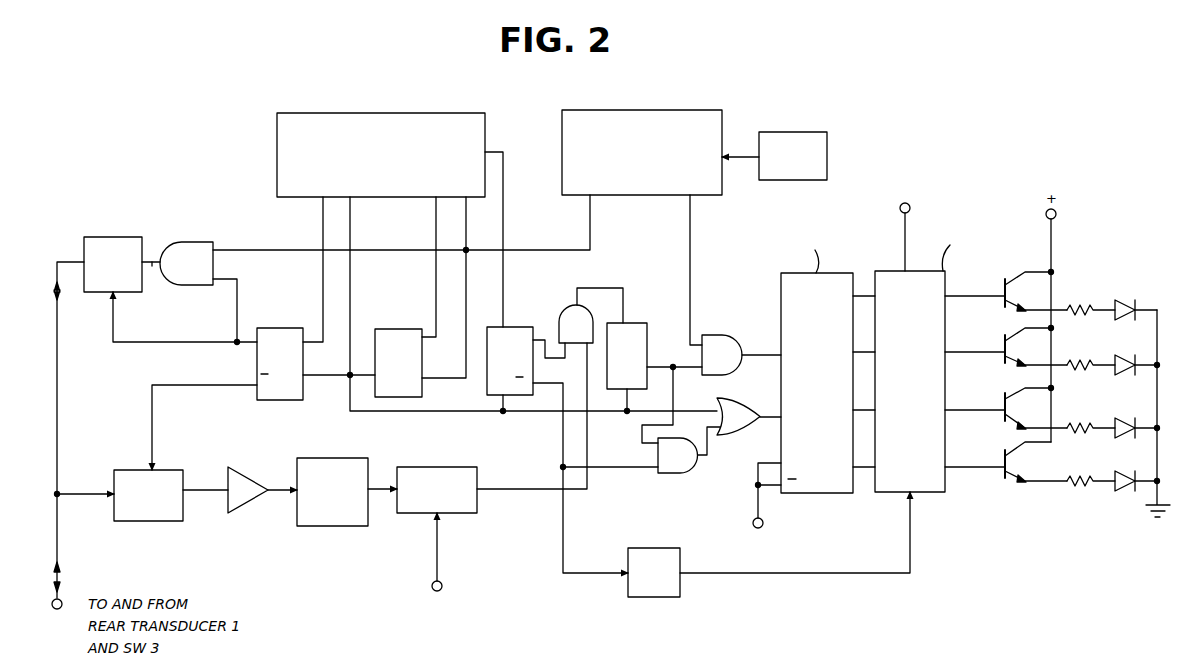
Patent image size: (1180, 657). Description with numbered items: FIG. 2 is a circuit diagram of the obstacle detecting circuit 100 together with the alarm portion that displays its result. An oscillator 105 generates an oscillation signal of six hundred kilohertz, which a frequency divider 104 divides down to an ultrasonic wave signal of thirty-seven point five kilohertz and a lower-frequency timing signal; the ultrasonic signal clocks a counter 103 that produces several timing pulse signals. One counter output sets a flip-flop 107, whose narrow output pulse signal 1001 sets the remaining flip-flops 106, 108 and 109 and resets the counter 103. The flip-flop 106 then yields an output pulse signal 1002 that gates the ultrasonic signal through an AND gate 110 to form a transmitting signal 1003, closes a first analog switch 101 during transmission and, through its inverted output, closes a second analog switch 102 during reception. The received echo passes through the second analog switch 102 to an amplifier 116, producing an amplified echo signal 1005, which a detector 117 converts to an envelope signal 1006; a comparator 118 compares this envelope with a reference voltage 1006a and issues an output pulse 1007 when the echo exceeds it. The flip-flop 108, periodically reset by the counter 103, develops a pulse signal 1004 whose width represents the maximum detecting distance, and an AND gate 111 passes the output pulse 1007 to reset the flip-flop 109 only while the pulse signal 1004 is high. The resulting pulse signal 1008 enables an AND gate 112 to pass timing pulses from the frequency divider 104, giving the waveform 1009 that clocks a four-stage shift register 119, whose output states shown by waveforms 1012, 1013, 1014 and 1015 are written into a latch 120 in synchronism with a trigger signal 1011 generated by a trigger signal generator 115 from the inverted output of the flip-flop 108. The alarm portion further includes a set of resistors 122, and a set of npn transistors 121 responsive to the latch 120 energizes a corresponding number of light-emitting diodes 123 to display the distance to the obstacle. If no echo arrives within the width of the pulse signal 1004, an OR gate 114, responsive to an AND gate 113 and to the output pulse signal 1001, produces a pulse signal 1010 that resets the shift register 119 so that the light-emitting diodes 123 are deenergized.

The obstacle detecting circuit 100 is at (915, 142).
The first analog switch 101 is at (113, 237).
The second analog switch 102 is at (166, 521).
The counter 103 is at (380, 113).
The frequency divider 104 is at (695, 110).
The oscillator 105 is at (780, 132).
The flip-flop 106 is at (303, 400).
The flip-flop 107 is at (415, 369).
The flip-flop 108 is at (497, 395).
The flip-flop 109 is at (617, 393).
The AND gate 110 is at (190, 242).
The AND gate 111 is at (585, 312).
The AND gate 112 is at (716, 335).
The AND gate 113 is at (678, 473).
The OR gate 114 is at (745, 400).
The trigger signal generator 115 is at (661, 599).
The amplifier 116 is at (252, 500).
The detector 117 is at (323, 526).
The comparator 118 is at (456, 513).
The shift register 119 is at (818, 493).
The latch 120 is at (932, 492).
The set of npn transistors 121 is at (1026, 495).
The set of resistors 122 is at (1083, 495).
The set of light-emitting diodes 123 is at (1133, 498).
The output pulse signal 1001 is at (363, 372).
The output pulse signal 1002 is at (240, 300).
The transmitting signal 1003 is at (152, 266).
The pulse signal 1004 is at (549, 352).
The amplified echo signal 1005 is at (280, 488).
The envelope signal 1006 is at (385, 488).
The reference voltage 1006a is at (430, 548).
The output pulse 1007 is at (490, 491).
The pulse signal 1008 is at (671, 362).
The waveform 1009 is at (755, 350).
The pulse signal 1010 is at (770, 420).
The trigger signal 1011 is at (748, 573).
The waveform 1012 is at (992, 293).
The waveform 1013 is at (992, 350).
The waveform 1014 is at (992, 408).
The waveform 1015 is at (992, 465).